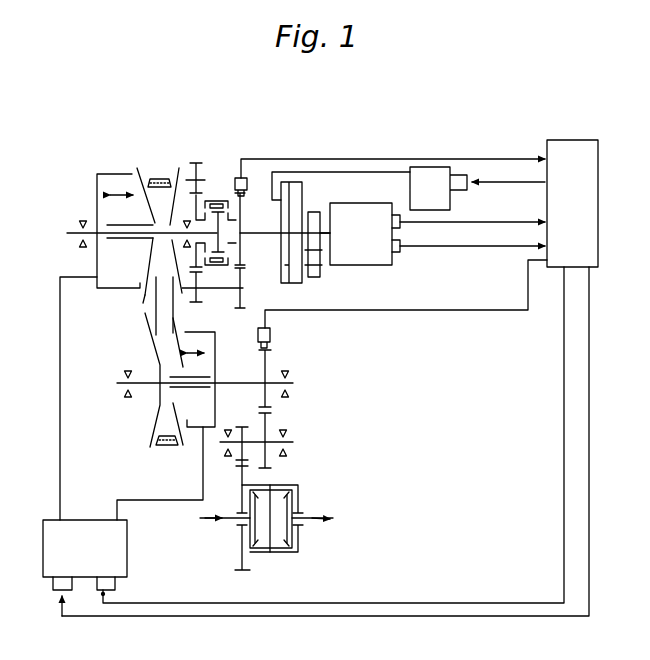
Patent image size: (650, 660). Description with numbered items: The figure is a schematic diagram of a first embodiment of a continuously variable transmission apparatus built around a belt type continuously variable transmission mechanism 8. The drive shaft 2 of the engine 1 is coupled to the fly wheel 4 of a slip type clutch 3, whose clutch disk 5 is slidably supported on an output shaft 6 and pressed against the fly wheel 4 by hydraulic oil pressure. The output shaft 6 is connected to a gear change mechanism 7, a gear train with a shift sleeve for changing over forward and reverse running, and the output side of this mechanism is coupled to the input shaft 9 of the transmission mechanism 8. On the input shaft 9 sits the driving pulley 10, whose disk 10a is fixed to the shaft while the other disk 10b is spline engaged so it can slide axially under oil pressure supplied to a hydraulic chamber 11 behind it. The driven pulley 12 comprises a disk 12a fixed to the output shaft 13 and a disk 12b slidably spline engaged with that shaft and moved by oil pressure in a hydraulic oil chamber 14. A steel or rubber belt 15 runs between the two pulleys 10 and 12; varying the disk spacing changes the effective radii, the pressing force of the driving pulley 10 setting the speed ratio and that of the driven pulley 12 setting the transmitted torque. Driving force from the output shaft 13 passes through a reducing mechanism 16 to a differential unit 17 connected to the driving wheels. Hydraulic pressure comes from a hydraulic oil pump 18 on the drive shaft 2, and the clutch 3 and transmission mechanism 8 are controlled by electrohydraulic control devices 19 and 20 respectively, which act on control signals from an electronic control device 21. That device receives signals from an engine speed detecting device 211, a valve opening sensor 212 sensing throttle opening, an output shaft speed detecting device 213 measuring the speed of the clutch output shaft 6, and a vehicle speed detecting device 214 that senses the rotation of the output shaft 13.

The engine 1 is at (370, 267).
The drive shaft 2 is at (324, 227).
The slip type clutch 3 is at (295, 180).
The fly wheel 4 is at (298, 285).
The clutch disk 5 is at (250, 271).
The output shaft 6 is at (285, 256).
The gear change mechanism 7 is at (225, 180).
The belt type continuously variable transmission mechanism 8 is at (130, 338).
The input shaft 9 is at (204, 215).
The driving pulley 10 is at (137, 167).
The disk 10a is at (180, 172).
The disk 10b is at (140, 166).
The hydraulic chamber 11 is at (97, 263).
The driven pulley 12 is at (142, 448).
The disk 12a is at (155, 420).
The disk 12b is at (184, 323).
The output shaft 13 is at (270, 380).
The hydraulic oil chamber 14 is at (213, 364).
The belt 15 is at (147, 308).
The reducing mechanism 16 is at (296, 412).
The differential unit 17 is at (307, 503).
The hydraulic oil pump 18 is at (312, 212).
The electrohydraulic control device 19 is at (432, 172).
The electrohydraulic control device 20 is at (127, 561).
The electronic control device 21 is at (577, 140).
The engine speed detecting device 211 is at (400, 250).
The valve opening sensor 212 is at (403, 223).
The output shaft speed detecting device 213 is at (243, 180).
The vehicle speed detecting device 214 is at (271, 334).